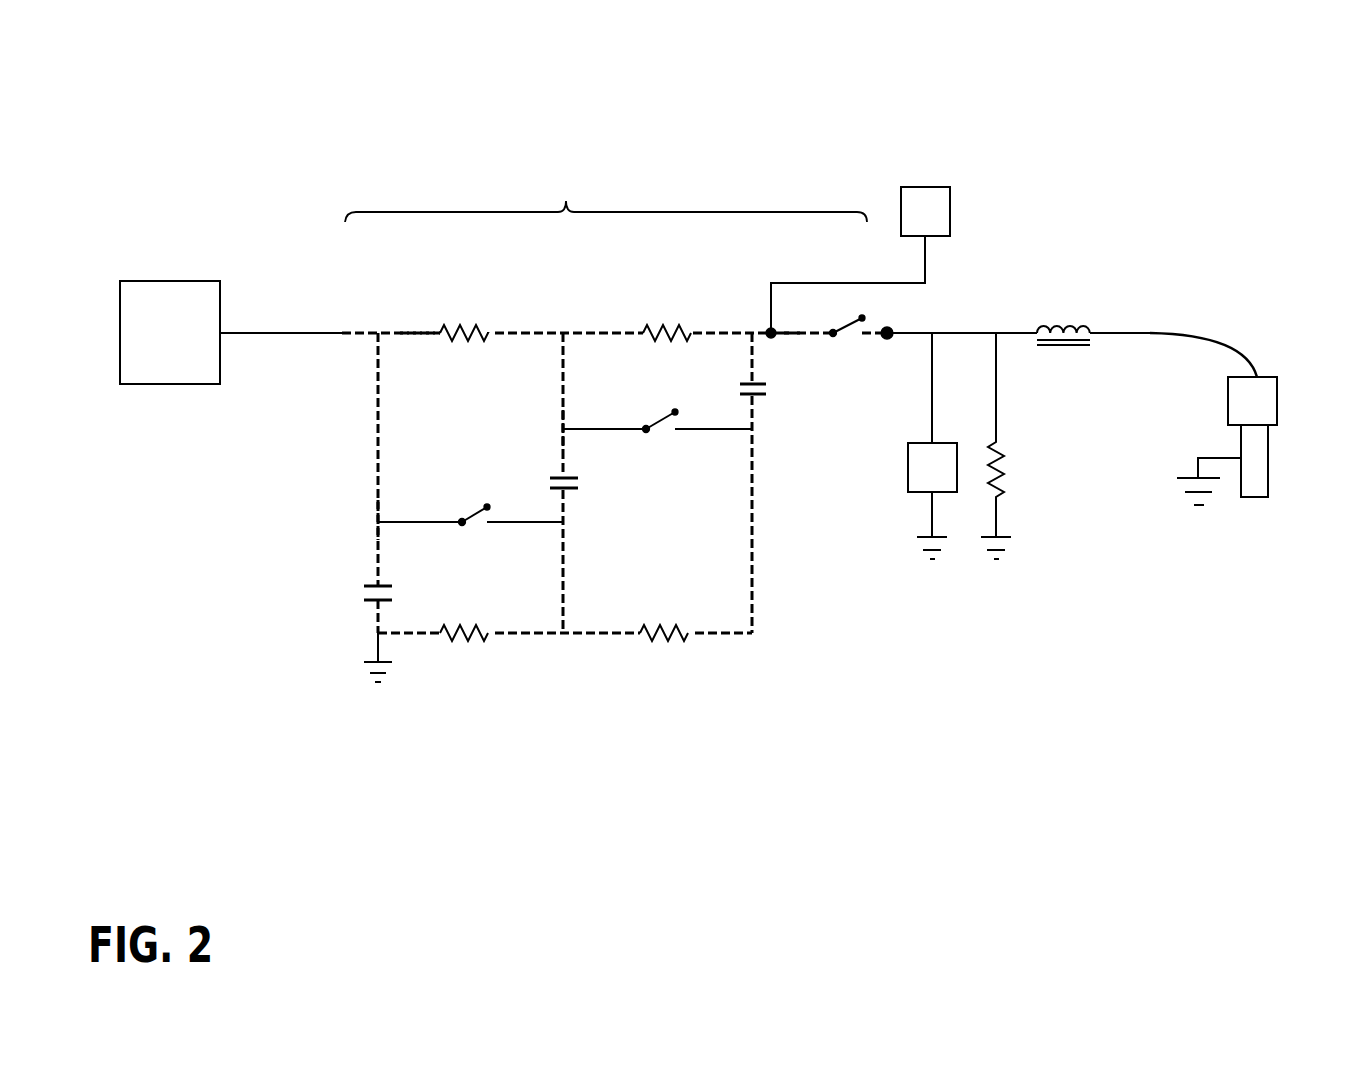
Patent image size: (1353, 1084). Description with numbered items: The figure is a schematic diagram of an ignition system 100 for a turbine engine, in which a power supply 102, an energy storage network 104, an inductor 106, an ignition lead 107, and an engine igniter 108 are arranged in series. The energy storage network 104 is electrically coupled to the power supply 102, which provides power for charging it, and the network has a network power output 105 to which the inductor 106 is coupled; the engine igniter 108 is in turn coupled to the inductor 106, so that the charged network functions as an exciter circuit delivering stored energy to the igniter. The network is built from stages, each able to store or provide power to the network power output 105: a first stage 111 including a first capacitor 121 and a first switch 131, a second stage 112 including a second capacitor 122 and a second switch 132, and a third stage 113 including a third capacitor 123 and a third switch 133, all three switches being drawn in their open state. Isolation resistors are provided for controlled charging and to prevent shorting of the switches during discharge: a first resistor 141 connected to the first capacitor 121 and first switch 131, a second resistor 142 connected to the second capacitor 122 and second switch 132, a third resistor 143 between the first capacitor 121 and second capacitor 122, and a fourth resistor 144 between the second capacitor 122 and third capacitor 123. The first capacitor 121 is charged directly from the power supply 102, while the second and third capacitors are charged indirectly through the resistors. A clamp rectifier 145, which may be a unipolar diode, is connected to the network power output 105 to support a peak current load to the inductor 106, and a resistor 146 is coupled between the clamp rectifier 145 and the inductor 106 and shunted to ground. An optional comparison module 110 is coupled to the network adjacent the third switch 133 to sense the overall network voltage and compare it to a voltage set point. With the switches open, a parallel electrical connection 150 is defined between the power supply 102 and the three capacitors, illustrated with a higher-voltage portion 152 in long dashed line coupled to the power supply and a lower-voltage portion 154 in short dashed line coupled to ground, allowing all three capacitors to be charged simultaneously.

The ignition system 100 is at (201, 90).
The power supply 102 is at (176, 345).
The energy storage network 104 is at (614, 399).
The network power output 105 is at (892, 331).
The inductor 106 is at (1082, 327).
The ignition lead 107 is at (1202, 327).
The engine igniter 108 is at (1265, 373).
The comparison module 110 is at (935, 224).
The first stage 111 is at (373, 517).
The second stage 112 is at (558, 424).
The third stage 113 is at (747, 328).
The first capacitor 121 is at (384, 586).
The second capacitor 122 is at (570, 490).
The third capacitor 123 is at (762, 396).
The first switch 131 is at (477, 515).
The second switch 132 is at (662, 418).
The third switch 133 is at (848, 337).
The first resistor 141 is at (468, 338).
The second resistor 142 is at (666, 338).
The third resistor 143 is at (463, 646).
The fourth resistor 144 is at (668, 643).
The clamp rectifier 145 is at (941, 481).
The resistor 146 is at (1002, 470).
The parallel electrical connection 150 is at (795, 342).
The higher-voltage portion 152 is at (423, 331).
The lower-voltage portion 154 is at (375, 615).